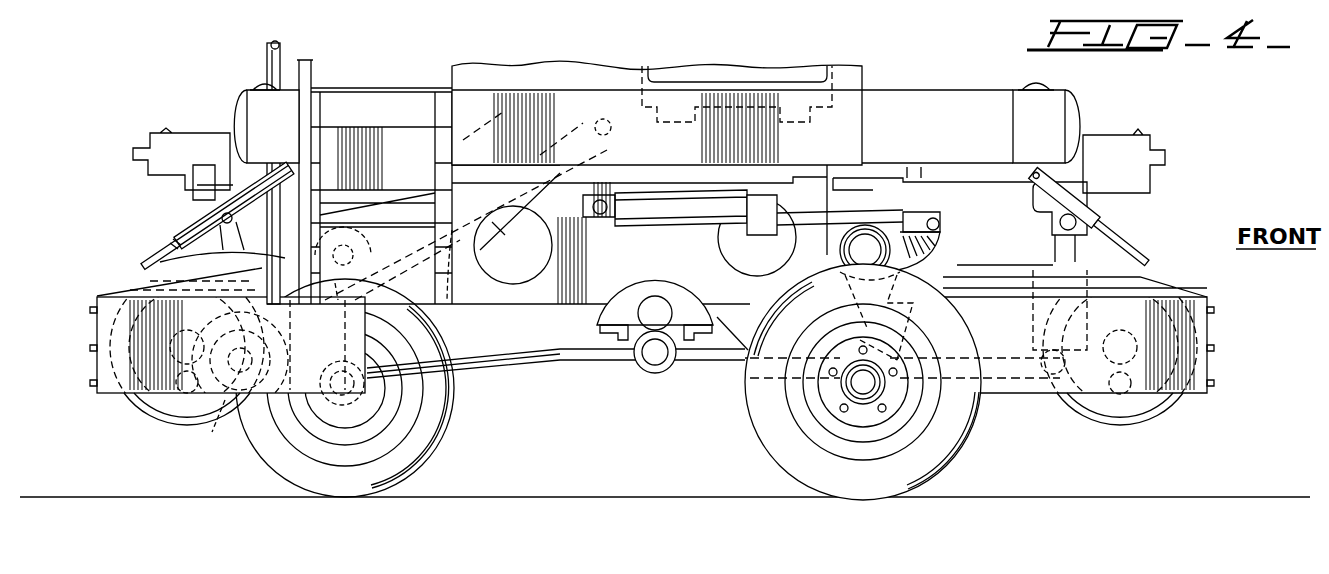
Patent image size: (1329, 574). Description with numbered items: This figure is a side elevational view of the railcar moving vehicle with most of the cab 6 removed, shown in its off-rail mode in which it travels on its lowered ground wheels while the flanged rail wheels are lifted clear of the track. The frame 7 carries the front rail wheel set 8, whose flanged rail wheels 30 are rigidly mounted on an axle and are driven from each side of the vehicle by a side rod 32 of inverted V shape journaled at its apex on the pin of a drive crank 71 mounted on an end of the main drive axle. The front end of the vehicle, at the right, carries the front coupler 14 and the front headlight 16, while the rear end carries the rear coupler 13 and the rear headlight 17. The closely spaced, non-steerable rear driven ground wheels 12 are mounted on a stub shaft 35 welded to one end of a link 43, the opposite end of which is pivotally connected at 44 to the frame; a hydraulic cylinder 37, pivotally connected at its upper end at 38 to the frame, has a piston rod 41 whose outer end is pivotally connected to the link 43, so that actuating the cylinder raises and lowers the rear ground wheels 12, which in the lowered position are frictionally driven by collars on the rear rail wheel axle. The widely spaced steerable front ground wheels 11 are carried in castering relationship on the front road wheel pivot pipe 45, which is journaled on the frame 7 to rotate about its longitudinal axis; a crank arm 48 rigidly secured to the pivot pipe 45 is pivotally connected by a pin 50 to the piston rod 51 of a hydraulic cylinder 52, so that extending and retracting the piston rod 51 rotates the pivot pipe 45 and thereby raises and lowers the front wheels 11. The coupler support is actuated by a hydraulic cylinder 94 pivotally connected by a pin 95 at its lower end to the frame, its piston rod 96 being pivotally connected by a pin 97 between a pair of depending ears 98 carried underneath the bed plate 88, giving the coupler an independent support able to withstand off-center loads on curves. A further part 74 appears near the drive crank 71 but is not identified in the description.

The vehicle cab 6 is at (742, 60).
The frame 7 is at (545, 314).
The front rail wheel set 8 is at (498, 123).
The steerable front ground wheels 11 is at (962, 471).
The rear driven ground wheels 12 is at (449, 457).
The rear coupler 13 is at (148, 131).
The front coupler 14 is at (1088, 182).
The front headlight 16 is at (1083, 120).
The rear headlight 17 is at (240, 118).
The flanged rail wheels 30 is at (166, 420).
The side rod 32 is at (552, 366).
The stub shaft 35 is at (350, 400).
The hydraulic cylinder 37 is at (466, 202).
The pivotal connection 38 is at (612, 133).
The piston rod 41 is at (503, 236).
The link 43 is at (405, 323).
The pivotal connection 44 is at (353, 255).
The front road wheel pivot pipe 45 is at (850, 252).
The crank arm 48 is at (945, 240).
The pin 50 is at (940, 220).
The piston rod 51 is at (870, 213).
The hydraulic cylinder 52 is at (682, 225).
The drive crank 71 is at (712, 311).
The pivot pin 74 is at (653, 306).
The bed plate 88 is at (193, 190).
The hydraulic cylinder 94 is at (130, 279).
The pin 95 is at (268, 379).
The piston rod 96 is at (160, 264).
The pin 97 is at (222, 210).
The depending ears 98 is at (173, 246).